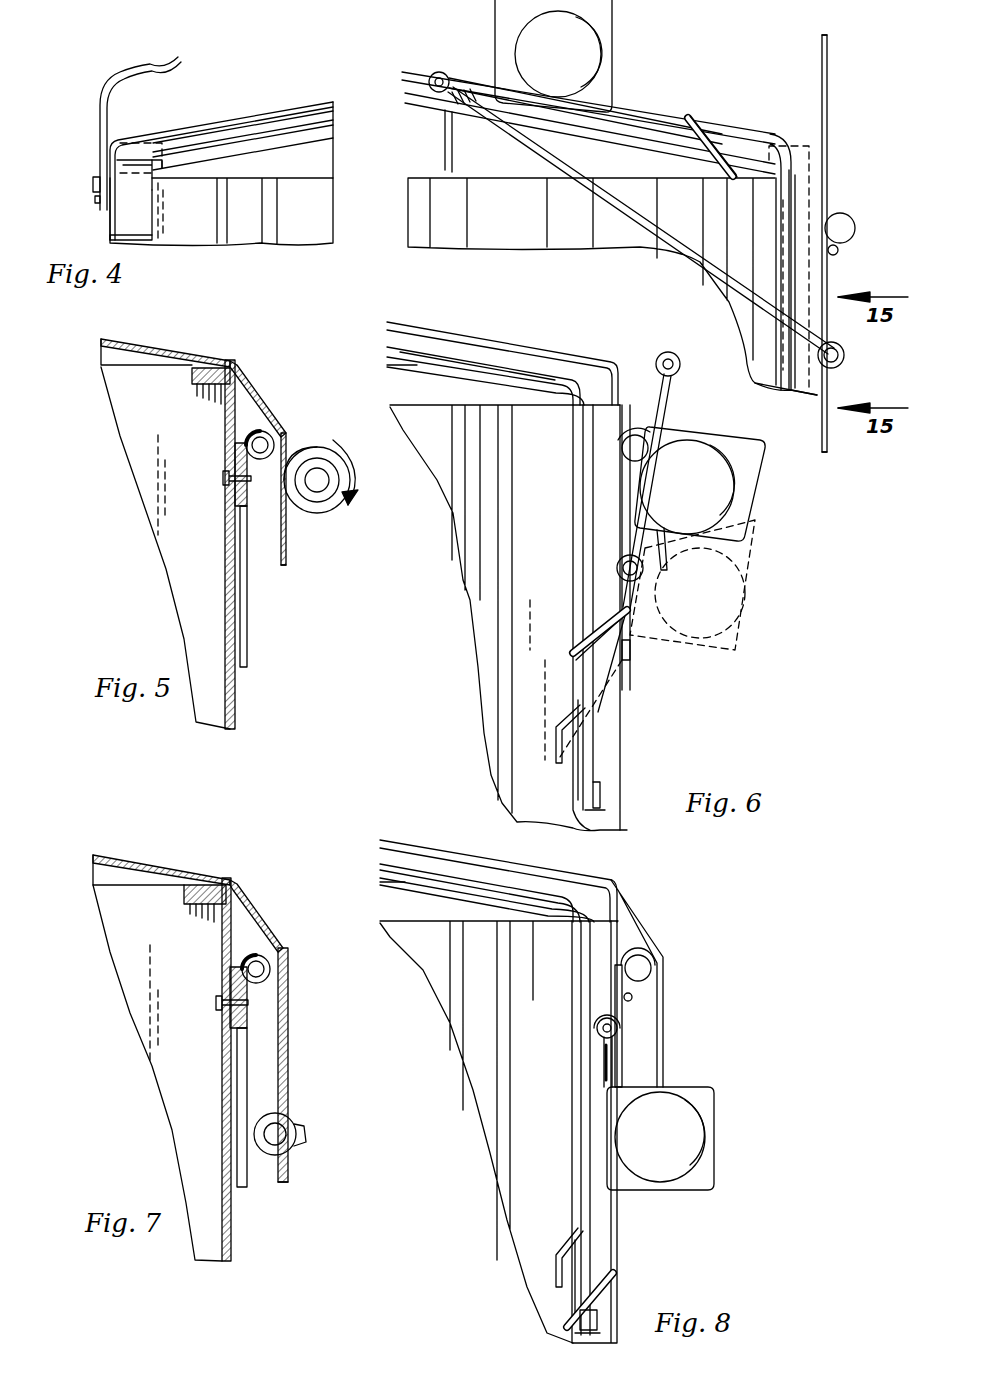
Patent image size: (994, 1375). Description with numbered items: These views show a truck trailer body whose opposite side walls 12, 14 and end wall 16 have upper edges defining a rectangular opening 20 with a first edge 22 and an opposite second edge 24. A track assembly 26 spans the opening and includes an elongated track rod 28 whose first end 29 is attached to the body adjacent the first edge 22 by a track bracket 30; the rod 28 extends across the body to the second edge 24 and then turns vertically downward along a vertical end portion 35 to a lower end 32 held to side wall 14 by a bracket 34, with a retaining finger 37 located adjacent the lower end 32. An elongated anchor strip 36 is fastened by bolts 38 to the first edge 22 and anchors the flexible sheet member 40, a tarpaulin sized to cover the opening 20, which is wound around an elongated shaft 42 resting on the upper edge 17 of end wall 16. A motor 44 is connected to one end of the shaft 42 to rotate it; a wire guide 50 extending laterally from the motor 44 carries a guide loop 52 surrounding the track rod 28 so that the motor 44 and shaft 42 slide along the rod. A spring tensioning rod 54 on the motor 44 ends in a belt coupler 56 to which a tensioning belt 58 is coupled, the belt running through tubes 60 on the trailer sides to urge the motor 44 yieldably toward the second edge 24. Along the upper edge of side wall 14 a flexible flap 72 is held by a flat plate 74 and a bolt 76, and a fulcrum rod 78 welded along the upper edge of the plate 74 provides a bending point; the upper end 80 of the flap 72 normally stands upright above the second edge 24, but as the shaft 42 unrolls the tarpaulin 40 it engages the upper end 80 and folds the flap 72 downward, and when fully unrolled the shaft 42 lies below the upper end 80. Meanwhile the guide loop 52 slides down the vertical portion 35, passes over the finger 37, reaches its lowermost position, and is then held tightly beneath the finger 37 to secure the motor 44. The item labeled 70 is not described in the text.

In FIG. 4, the side wall 12 is at (820, 390).
In FIG. 5, the side wall 12 is at (238, 702).
In FIG. 6, the side wall 12 is at (622, 752).
In FIG. 7, the side wall 12 is at (234, 1258).
In FIG. 8, the side wall 12 is at (622, 1290).
In FIG. 4, the side wall 14 is at (110, 222).
In FIG. 4, the end wall 16 is at (325, 222).
In FIG. 6, the end wall 16 is at (483, 707).
In FIG. 8, the end wall 16 is at (500, 1202).
In FIG. 4, the upper edge 17 is at (290, 95).
In FIG. 6, the upper edge 17 is at (412, 322).
In FIG. 8, the upper edge 17 is at (388, 845).
In FIG. 5, the rectangular opening 20 is at (138, 345).
In FIG. 7, the rectangular opening 20 is at (138, 860).
In FIG. 4, the first edge 22 is at (160, 133).
In FIG. 4, the second edge 24 is at (780, 145).
In FIG. 5, the second edge 24 is at (168, 365).
In FIG. 7, the second edge 24 is at (172, 880).
In FIG. 4, the track assembly 26 is at (385, 80).
In FIG. 6, the track assembly 26 is at (430, 345).
In FIG. 8, the track assembly 26 is at (405, 845).
In FIG. 4, the track rod 28 is at (395, 130).
In FIG. 6, the track rod 28 is at (470, 350).
In FIG. 8, the track rod 28 is at (447, 865).
In FIG. 4, the first end 29 is at (190, 152).
In FIG. 4, the track bracket 30 is at (118, 234).
In FIG. 6, the lower end 32 is at (600, 825).
In FIG. 8, the lower end 32 is at (580, 1336).
In FIG. 6, the bracket 34 is at (605, 808).
In FIG. 8, the bracket 34 is at (580, 1320).
In FIG. 4, the vertical end portion 35 is at (776, 364).
In FIG. 6, the vertical end portion 35 is at (580, 678).
In FIG. 8, the vertical end portion 35 is at (575, 1225).
In FIG. 4, the anchor strip 36 is at (92, 181).
In FIG. 6, the retaining finger 37 is at (556, 740).
In FIG. 8, the retaining finger 37 is at (556, 1255).
In FIG. 4, the bolts 38 is at (95, 199).
In FIG. 4, the sheet member 40 is at (250, 112).
In FIG. 5, the sheet member 40 is at (240, 358).
In FIG. 6, the sheet member 40 is at (540, 356).
In FIG. 7, the sheet member 40 is at (235, 880).
In FIG. 8, the sheet member 40 is at (515, 872).
In FIG. 5, the shaft 42 is at (325, 448).
In FIG. 7, the shaft 42 is at (282, 1160).
In FIG. 4, the motor 44 is at (590, 62).
In FIG. 6, the motor 44 is at (730, 500).
In FIG. 8, the motor 44 is at (700, 1125).
In FIG. 4, the wire guide 50 is at (680, 118).
In FIG. 6, the wire guide 50 is at (620, 590).
In FIG. 8, the wire guide 50 is at (610, 1245).
In FIG. 4, the guide loop 52 is at (718, 120).
In FIG. 6, the guide loop 52 is at (600, 640).
In FIG. 8, the guide loop 52 is at (625, 1275).
In FIG. 4, the spring tensioning rod 54 is at (478, 62).
In FIG. 6, the spring tensioning rod 54 is at (665, 375).
In FIG. 8, the spring tensioning rod 54 is at (608, 1062).
In FIG. 4, the belt coupler 56 is at (435, 72).
In FIG. 6, the belt coupler 56 is at (678, 355).
In FIG. 8, the belt coupler 56 is at (612, 1032).
In FIG. 4, the tensioning belt 58 is at (690, 262).
In FIG. 4, the tubes 60 is at (845, 358).
In FIG. 6, the tubes 60 is at (617, 565).
In FIG. 4, the hose 70 is at (104, 66).
In FIG. 4, the flexible flap 72 is at (828, 96).
In FIG. 5, the flexible flap 72 is at (288, 560).
In FIG. 6, the flexible flap 72 is at (620, 478).
In FIG. 7, the flexible flap 72 is at (292, 1045).
In FIG. 8, the flexible flap 72 is at (660, 1000).
In FIG. 4, the flat plate 74 is at (827, 451).
In FIG. 5, the flat plate 74 is at (248, 666).
In FIG. 6, the flat plate 74 is at (635, 658).
In FIG. 7, the flat plate 74 is at (250, 1065).
In FIG. 8, the flat plate 74 is at (623, 1027).
In FIG. 5, the bolt 76 is at (226, 485).
In FIG. 7, the bolt 76 is at (218, 1000).
In FIG. 4, the fulcrum rod 78 is at (846, 215).
In FIG. 5, the fulcrum rod 78 is at (246, 445).
In FIG. 6, the fulcrum rod 78 is at (622, 450).
In FIG. 7, the fulcrum rod 78 is at (242, 969).
In FIG. 8, the fulcrum rod 78 is at (647, 970).
In FIG. 4, the upper end 80 is at (820, 44).
In FIG. 5, the upper end 80 is at (284, 568).
In FIG. 6, the upper end 80 is at (668, 555).
In FIG. 7, the upper end 80 is at (290, 1085).